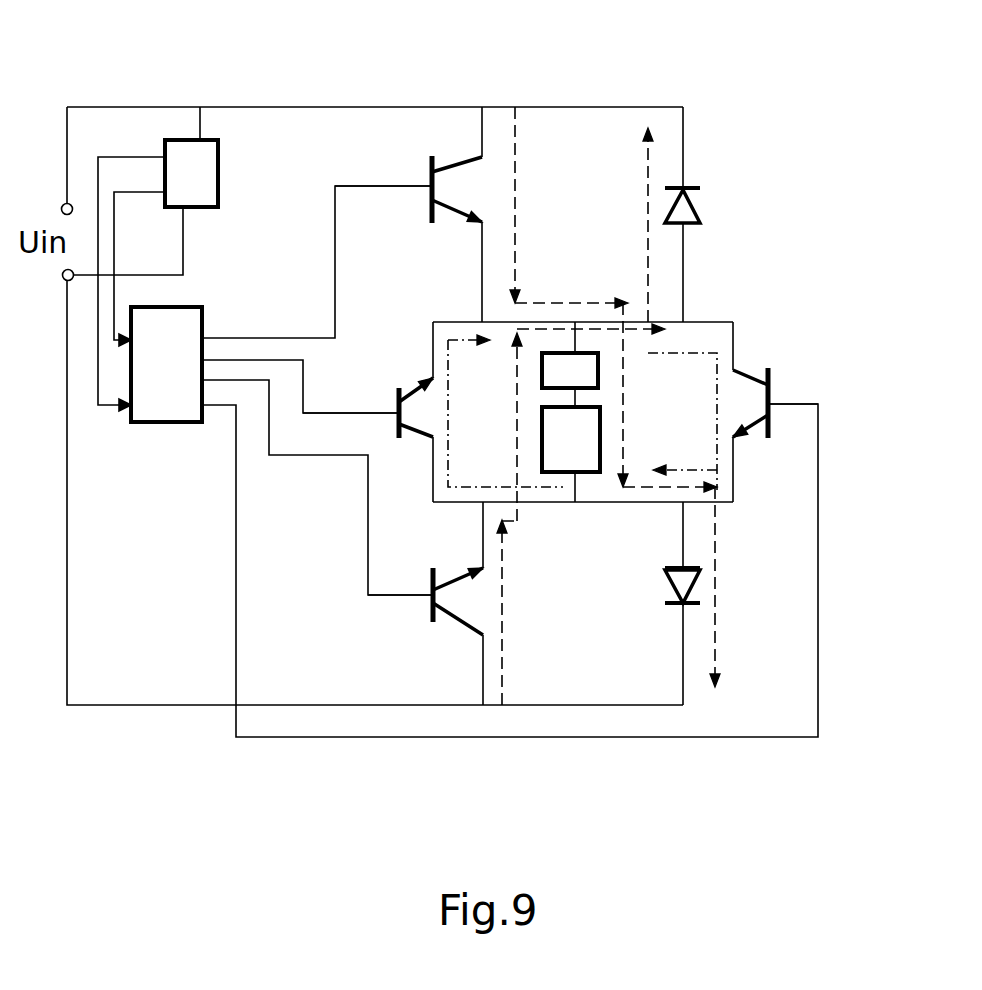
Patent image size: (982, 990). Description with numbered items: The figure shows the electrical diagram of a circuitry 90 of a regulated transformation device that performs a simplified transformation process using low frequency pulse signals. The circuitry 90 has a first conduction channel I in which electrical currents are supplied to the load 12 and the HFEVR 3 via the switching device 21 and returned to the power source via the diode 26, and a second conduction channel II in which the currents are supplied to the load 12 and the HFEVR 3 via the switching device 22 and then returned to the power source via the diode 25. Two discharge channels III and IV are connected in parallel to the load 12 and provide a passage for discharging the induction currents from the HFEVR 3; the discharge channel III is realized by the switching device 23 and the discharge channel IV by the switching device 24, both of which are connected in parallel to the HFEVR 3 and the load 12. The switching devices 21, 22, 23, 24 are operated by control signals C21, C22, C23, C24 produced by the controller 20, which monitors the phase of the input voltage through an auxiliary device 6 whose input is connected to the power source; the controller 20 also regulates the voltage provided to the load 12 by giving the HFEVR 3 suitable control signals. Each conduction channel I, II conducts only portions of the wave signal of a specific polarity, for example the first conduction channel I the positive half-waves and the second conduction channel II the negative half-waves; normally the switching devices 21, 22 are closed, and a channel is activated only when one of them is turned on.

The HFEVR 3 is at (570, 364).
The auxiliary device 6 is at (191, 173).
The load 12 is at (571, 454).
The controller 20 is at (183, 320).
The switching device 21 is at (502, 214).
The switching device 22 is at (465, 587).
The switching device 23 is at (430, 438).
The switching device 24 is at (783, 388).
The diode 25 is at (688, 180).
The diode 26 is at (702, 585).
The circuitry 90 is at (900, 254).
The control signal C21 is at (367, 190).
The control signal C22 is at (392, 597).
The control signal C23 is at (338, 412).
The control signal C24 is at (818, 420).
The first conduction channel I is at (438, 72).
The second conduction channel II is at (718, 72).
The discharge channel III is at (408, 522).
The discharge channel IV is at (790, 490).